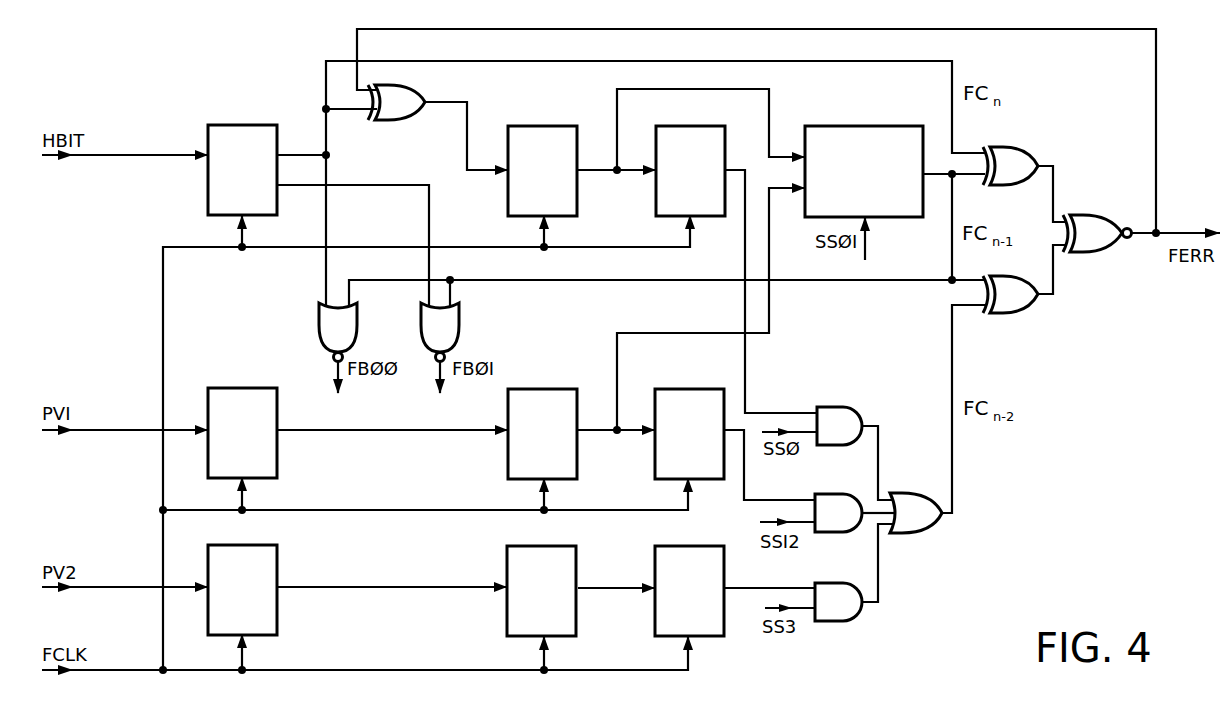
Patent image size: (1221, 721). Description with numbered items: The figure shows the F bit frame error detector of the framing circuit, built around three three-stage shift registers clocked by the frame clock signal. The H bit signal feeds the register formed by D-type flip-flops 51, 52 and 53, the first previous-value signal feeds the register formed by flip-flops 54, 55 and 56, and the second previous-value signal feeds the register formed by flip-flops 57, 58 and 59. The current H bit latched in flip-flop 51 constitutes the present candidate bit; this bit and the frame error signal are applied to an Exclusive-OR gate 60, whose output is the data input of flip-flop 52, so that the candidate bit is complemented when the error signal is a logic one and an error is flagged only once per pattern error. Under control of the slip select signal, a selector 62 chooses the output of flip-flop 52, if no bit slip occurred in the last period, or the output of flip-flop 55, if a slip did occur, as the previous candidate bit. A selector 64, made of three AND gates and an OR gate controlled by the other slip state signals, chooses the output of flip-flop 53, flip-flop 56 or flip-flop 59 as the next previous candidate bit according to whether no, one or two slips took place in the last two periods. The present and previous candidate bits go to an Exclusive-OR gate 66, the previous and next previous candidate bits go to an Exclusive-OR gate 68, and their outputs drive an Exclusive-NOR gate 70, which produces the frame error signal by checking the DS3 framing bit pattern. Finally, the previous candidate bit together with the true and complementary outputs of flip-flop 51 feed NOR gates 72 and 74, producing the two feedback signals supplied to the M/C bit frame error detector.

The D-type flip-flop 51 is at (208, 190).
The D-type flip-flop 52 is at (508, 200).
The D-type flip-flop 53 is at (656, 200).
The D-type flip-flop 54 is at (278, 458).
The D-type flip-flop 55 is at (506, 459).
The D-type flip-flop 56 is at (656, 459).
The D-type flip-flop 57 is at (278, 614).
The D-type flip-flop 58 is at (506, 615).
The D-type flip-flop 59 is at (656, 615).
The Exclusive-OR gate 60 is at (416, 120).
The selector 62 is at (849, 125).
The selector 64 is at (916, 558).
The Exclusive-OR gate 66 is at (1010, 147).
The Exclusive-OR gate 68 is at (1010, 313).
The Exclusive-NOR gate 70 is at (1083, 213).
The NOR gate 72 is at (319, 328).
The NOR gate 74 is at (461, 329).